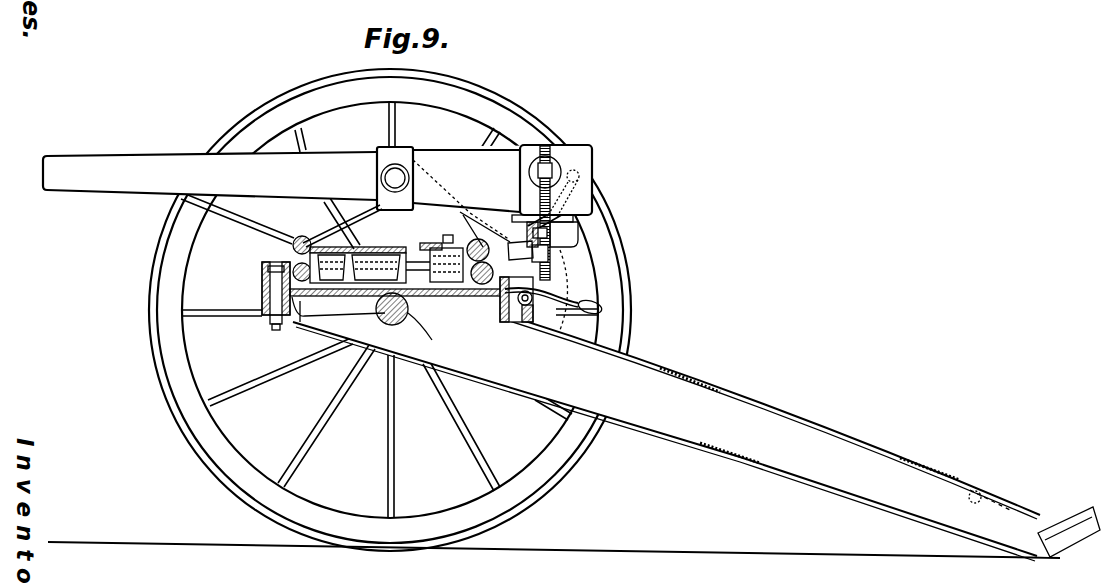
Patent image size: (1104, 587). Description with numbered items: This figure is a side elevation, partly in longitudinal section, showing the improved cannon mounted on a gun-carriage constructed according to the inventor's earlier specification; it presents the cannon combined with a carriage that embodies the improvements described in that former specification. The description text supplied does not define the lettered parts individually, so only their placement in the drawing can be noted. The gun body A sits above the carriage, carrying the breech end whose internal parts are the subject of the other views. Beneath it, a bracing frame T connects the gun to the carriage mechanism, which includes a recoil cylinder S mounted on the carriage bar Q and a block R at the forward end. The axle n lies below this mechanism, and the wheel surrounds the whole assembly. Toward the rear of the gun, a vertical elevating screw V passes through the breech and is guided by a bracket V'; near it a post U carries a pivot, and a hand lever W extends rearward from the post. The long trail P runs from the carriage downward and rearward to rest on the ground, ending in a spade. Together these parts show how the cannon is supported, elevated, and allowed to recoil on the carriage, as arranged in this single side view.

The gun body A is at (317, 192).
The trunnion struts T is at (406, 226).
The elevating screw V is at (550, 213).
The screw bracket V' is at (543, 241).
The end block R is at (276, 296).
The recoil cylinder S is at (393, 263).
The axle n is at (380, 307).
The carriage bar Q is at (397, 318).
The pivot post U is at (524, 299).
The lever W is at (554, 290).
The trail P is at (696, 429).